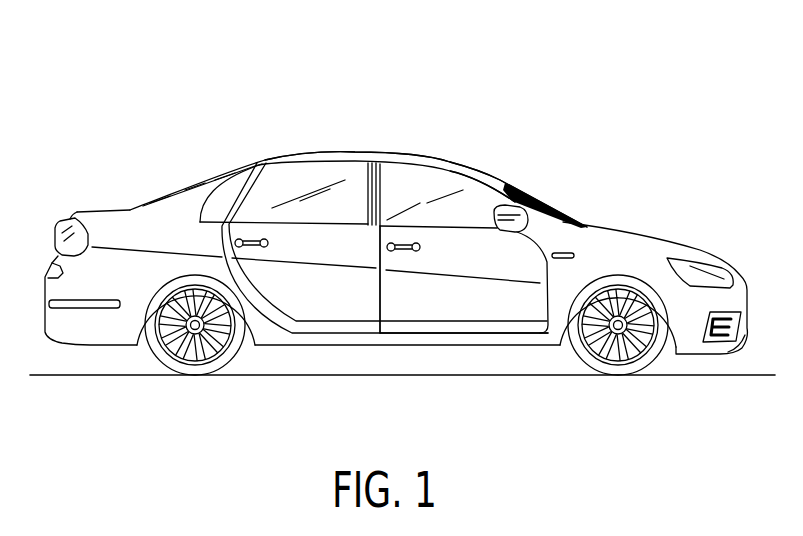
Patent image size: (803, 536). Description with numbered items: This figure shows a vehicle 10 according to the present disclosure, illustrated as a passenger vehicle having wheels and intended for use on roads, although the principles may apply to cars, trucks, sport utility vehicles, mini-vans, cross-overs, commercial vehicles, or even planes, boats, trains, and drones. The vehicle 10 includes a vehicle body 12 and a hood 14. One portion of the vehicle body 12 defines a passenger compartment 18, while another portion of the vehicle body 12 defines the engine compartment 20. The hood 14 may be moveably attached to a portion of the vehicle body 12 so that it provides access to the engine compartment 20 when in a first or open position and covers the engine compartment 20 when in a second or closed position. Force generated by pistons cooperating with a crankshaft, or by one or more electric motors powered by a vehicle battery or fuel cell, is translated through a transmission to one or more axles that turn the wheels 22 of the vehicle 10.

The vehicle 10 is at (96, 113).
The vehicle body 12 is at (466, 250).
The hood 14 is at (627, 231).
The passenger compartment 18 is at (422, 185).
The engine compartment 20 is at (594, 238).
The wheels 22 is at (566, 327).